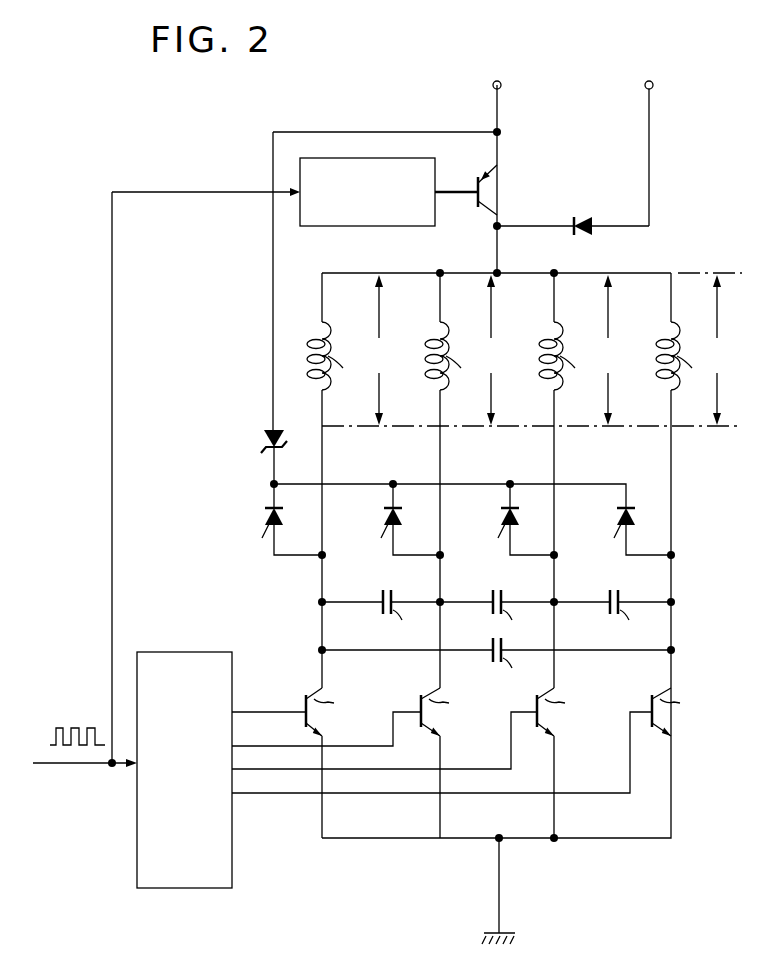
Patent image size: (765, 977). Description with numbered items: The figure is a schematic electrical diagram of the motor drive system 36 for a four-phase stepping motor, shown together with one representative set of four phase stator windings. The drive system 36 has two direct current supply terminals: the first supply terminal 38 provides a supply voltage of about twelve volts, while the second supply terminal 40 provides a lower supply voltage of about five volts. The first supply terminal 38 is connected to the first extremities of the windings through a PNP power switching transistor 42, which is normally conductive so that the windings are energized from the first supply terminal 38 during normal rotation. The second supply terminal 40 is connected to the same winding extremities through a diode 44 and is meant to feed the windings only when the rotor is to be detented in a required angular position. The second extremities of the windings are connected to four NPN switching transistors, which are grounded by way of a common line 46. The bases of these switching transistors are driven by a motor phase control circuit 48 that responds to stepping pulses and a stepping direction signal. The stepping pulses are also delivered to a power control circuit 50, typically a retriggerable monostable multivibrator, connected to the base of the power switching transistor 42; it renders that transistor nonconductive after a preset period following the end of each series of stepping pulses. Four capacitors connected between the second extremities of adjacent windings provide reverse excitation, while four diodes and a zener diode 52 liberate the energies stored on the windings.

The motor drive system 36 is at (160, 143).
The first supply terminal 38 is at (501, 85).
The second supply terminal 40 is at (653, 85).
The power switching transistor 42 is at (488, 192).
The diode 44 is at (586, 214).
The common line 46 is at (500, 913).
The motor phase control circuit 48 is at (176, 650).
The power control circuit 50 is at (437, 170).
The zener diode 52 is at (266, 430).